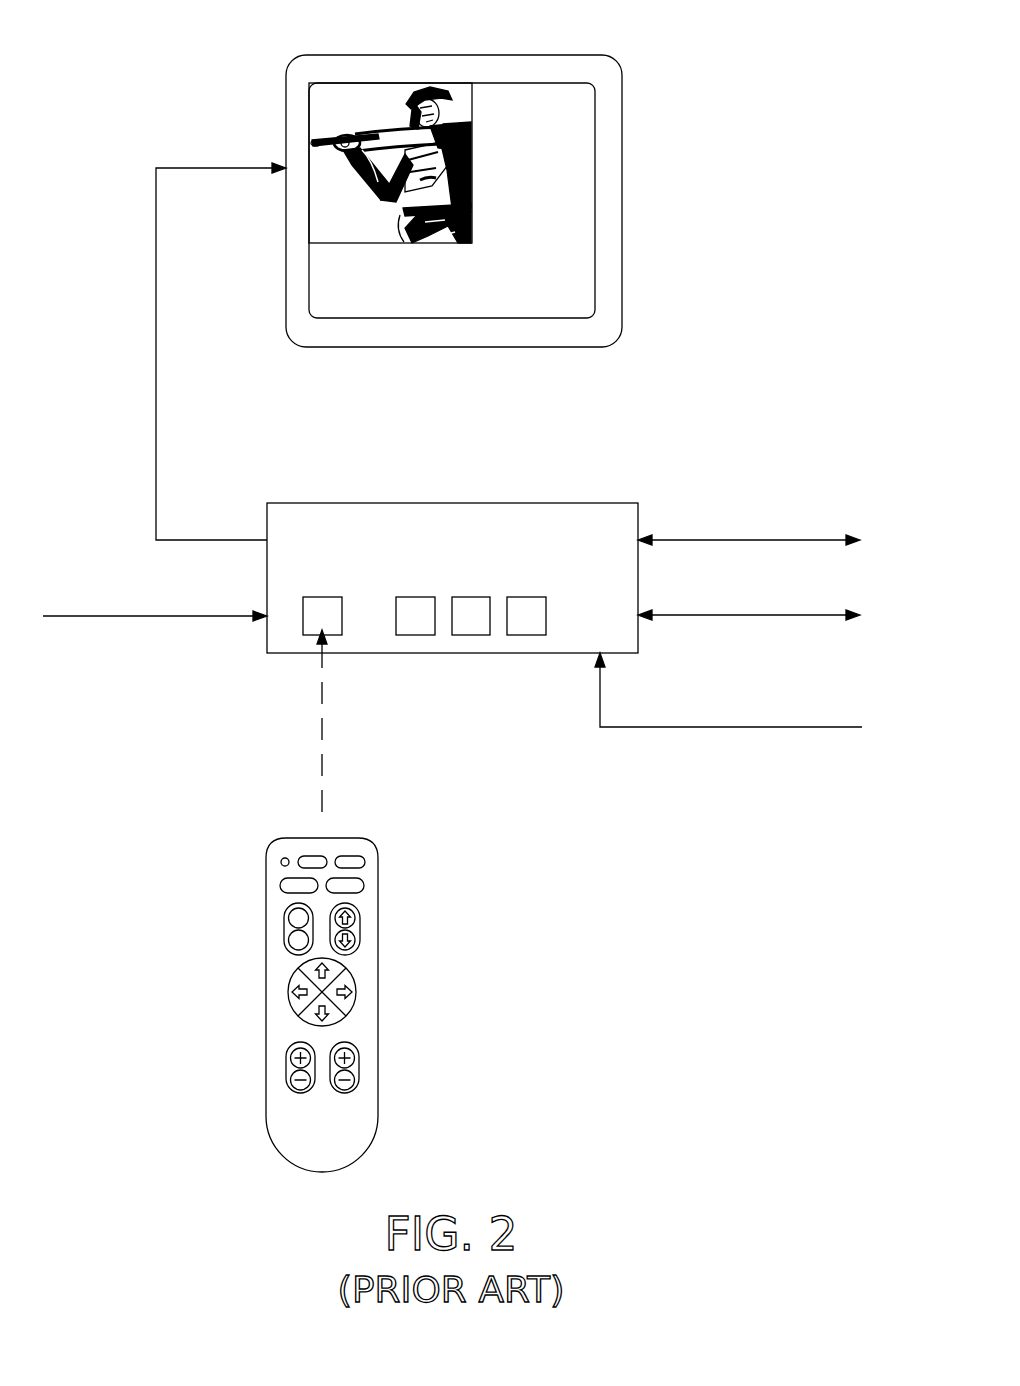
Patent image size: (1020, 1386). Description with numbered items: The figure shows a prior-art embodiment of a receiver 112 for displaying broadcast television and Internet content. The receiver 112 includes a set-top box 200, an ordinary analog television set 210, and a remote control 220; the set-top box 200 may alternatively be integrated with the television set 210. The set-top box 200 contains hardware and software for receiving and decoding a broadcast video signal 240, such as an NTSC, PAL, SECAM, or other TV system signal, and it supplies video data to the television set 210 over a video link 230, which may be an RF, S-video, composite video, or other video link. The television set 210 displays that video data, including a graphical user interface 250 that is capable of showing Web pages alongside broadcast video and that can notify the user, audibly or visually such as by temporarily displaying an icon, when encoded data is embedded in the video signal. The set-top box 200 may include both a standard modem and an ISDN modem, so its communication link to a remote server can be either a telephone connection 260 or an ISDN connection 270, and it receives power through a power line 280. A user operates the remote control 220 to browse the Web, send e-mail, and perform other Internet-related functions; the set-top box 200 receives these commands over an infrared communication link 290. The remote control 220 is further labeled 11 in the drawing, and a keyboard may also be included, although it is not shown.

The receiver 112 is at (756, 51).
The television set 210 is at (622, 185).
The graphical user interface 250 is at (551, 260).
The video link 230 is at (156, 427).
The set-top box 200 is at (629, 645).
The broadcast video signal 240 is at (118, 616).
The telephone connection 260 is at (683, 540).
The ISDN connection 270 is at (713, 615).
The power line 280 is at (672, 727).
The infrared communication link 290 is at (322, 692).
The remote control 220 is at (365, 1005).
The remote control unit 11 is at (335, 1143).